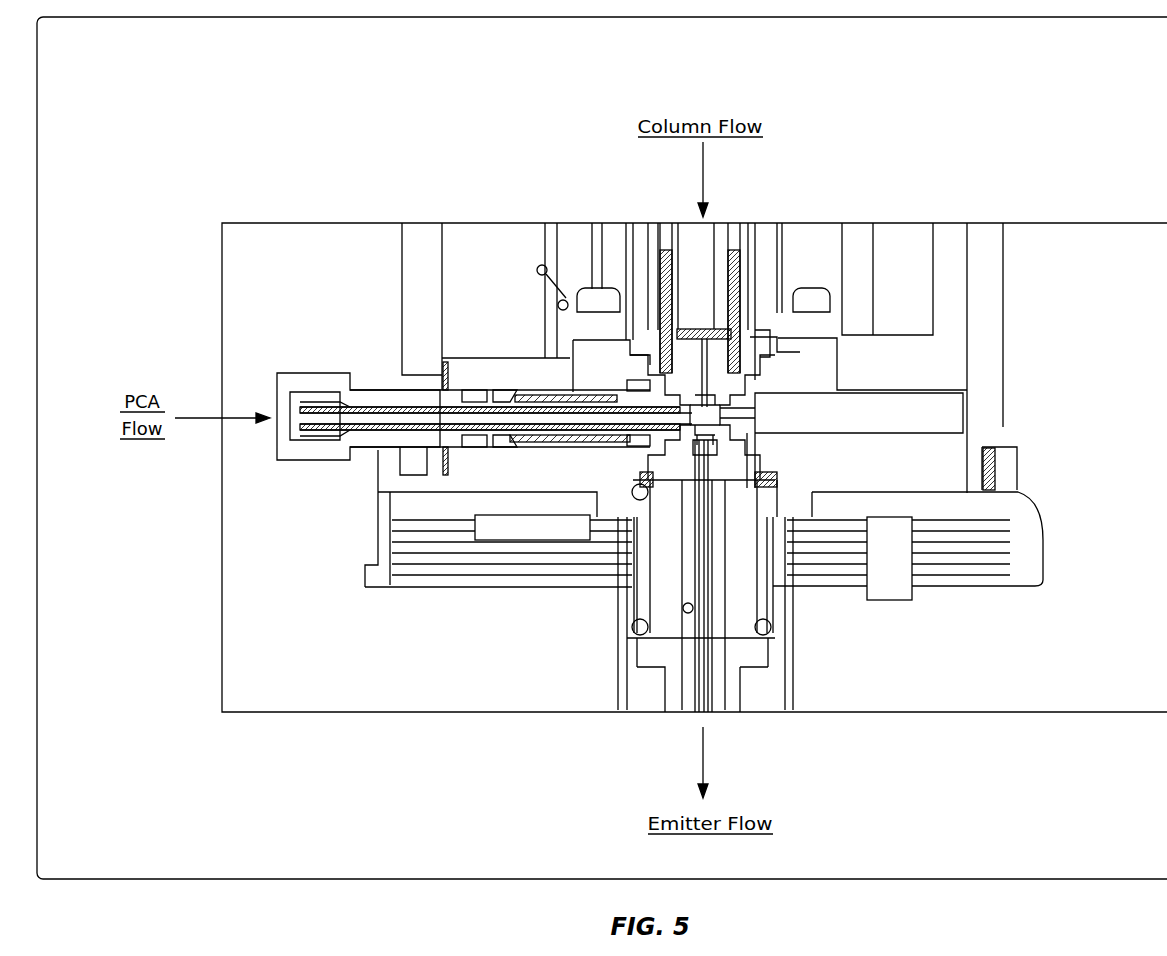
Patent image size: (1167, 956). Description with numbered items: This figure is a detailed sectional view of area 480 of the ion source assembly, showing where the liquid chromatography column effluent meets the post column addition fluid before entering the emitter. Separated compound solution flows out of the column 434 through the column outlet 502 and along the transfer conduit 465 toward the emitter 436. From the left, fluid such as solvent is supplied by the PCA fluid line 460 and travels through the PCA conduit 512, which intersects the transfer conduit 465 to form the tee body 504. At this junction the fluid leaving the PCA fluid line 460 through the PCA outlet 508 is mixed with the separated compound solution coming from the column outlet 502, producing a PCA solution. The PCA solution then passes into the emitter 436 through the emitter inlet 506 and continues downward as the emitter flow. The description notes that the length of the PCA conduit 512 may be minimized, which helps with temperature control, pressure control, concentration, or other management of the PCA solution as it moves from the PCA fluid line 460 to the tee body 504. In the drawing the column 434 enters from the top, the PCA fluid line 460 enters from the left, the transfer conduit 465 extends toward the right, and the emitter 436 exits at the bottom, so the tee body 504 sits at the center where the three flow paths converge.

The area 480 is at (636, 46).
The PCA fluid line 460 is at (339, 358).
The column 434 is at (658, 268).
The column outlet 502 is at (717, 385).
The tee body 504 is at (758, 392).
The transfer conduit 465 is at (719, 413).
The PCA outlet 508 is at (664, 441).
The emitter 436 is at (628, 668).
The PCA conduit 512 is at (707, 445).
The emitter inlet 506 is at (728, 450).